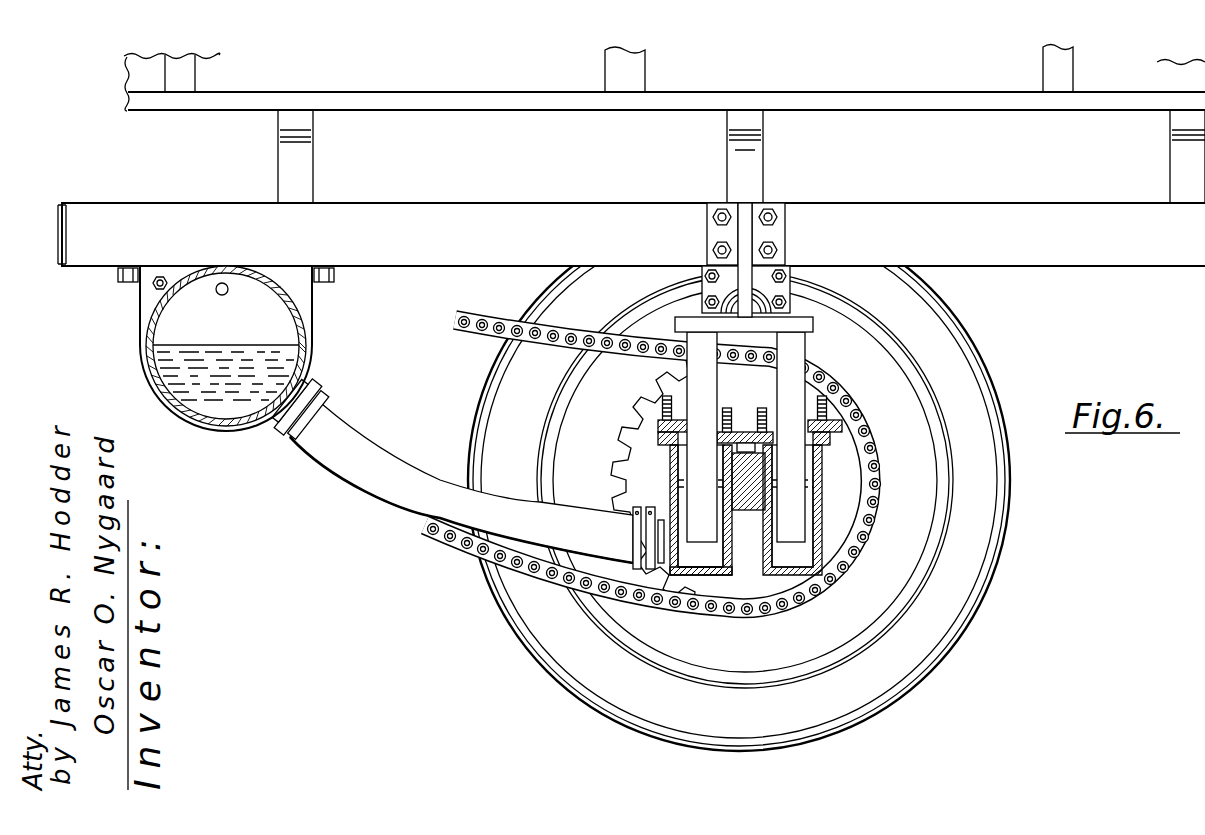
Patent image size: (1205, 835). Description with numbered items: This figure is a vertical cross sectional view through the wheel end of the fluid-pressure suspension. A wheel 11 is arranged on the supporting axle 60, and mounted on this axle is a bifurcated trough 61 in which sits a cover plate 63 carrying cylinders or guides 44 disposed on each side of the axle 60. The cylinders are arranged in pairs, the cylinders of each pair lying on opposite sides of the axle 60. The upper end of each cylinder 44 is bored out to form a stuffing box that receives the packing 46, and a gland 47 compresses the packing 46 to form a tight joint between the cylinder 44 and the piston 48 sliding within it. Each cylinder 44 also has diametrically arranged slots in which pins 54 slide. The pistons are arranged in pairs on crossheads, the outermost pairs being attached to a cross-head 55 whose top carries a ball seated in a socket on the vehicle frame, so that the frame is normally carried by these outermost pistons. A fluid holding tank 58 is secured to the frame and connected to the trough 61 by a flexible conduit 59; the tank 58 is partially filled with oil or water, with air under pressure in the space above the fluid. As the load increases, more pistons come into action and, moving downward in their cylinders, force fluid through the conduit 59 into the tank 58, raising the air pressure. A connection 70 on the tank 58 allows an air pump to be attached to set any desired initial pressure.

The wheel 11 is at (912, 683).
The cylinder 44 is at (700, 513).
The packing 46 is at (676, 450).
The gland 47 is at (653, 392).
The piston 48 is at (787, 395).
The pin 54 is at (812, 485).
The cross-head 55 is at (695, 315).
The fluid holding tank 58 is at (183, 367).
The flexible conduit 59 is at (327, 453).
The supporting axle 60 is at (745, 511).
The bifurcated trough 61 is at (723, 575).
The cover plate 63 is at (838, 431).
The connection 70 is at (222, 283).